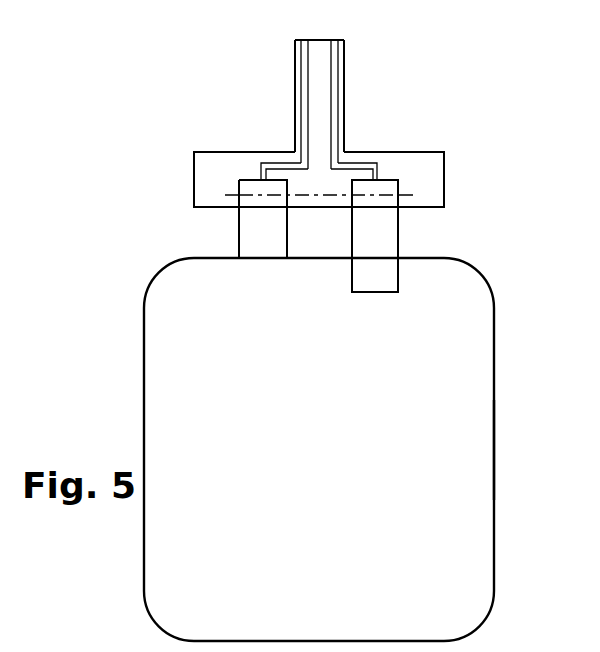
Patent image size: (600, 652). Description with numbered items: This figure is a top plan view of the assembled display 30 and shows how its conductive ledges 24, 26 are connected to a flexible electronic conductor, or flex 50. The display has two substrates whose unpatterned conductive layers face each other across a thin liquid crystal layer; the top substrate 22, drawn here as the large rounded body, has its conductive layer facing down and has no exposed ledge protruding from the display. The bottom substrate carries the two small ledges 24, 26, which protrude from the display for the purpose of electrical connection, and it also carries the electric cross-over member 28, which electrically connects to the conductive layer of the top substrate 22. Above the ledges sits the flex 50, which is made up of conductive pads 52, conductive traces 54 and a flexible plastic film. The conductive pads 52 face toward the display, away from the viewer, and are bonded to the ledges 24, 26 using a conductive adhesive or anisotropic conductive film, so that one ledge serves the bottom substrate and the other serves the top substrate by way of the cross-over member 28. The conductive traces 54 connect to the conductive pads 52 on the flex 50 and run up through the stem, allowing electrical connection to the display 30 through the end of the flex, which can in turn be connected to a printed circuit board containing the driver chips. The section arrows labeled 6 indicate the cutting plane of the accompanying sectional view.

The top substrate 22 is at (468, 367).
The ledge 24 is at (420, 247).
The ledge 26 is at (212, 234).
The electric cross-over member 28 is at (433, 229).
The display 30 is at (548, 455).
The flexible electronic conductor (flex) 50 is at (447, 162).
The conductive pads 52 is at (277, 188).
The conductive traces 54 is at (307, 63).
The section line 6- 6 is at (413, 150).